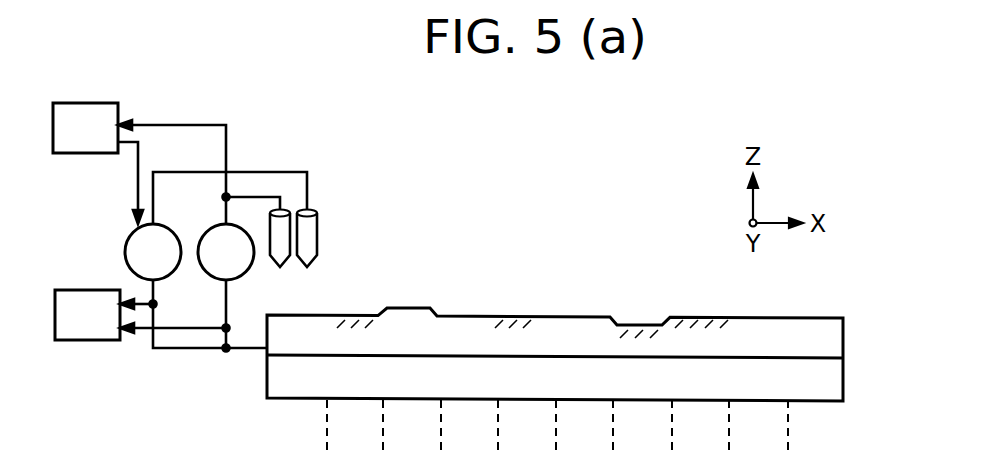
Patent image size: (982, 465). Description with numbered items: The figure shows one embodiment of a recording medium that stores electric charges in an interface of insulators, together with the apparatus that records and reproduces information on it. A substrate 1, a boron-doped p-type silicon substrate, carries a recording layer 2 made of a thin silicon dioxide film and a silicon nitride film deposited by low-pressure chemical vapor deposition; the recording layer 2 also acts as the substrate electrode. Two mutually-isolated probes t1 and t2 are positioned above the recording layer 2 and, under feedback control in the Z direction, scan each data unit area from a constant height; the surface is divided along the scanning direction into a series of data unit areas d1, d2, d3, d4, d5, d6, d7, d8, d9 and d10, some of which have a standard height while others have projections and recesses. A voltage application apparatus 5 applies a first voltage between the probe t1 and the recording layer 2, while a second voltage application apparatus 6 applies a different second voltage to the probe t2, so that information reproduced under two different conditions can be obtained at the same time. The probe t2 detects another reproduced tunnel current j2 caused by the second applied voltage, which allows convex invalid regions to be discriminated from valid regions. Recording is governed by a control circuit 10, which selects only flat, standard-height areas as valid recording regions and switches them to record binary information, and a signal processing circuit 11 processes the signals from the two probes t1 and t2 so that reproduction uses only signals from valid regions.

The substrate 1 is at (275, 386).
The recording layer 2 is at (288, 352).
The voltage application apparatus 5 is at (212, 277).
The voltage application apparatus 6 is at (126, 249).
The control circuit 10 is at (95, 153).
The signal processing circuit 11 is at (90, 340).
The probe t1 is at (281, 254).
The probe t2 is at (323, 239).
The reproduced tunnel current j2 is at (192, 180).
The region d1 is at (294, 429).
The region d2 is at (354, 429).
The region d3 is at (411, 429).
The region d4 is at (469, 429).
The region d5 is at (526, 429).
The region d6 is at (584, 429).
The region d7 is at (642, 429).
The region d8 is at (699, 429).
The region d9 is at (757, 429).
The region d10 is at (818, 429).